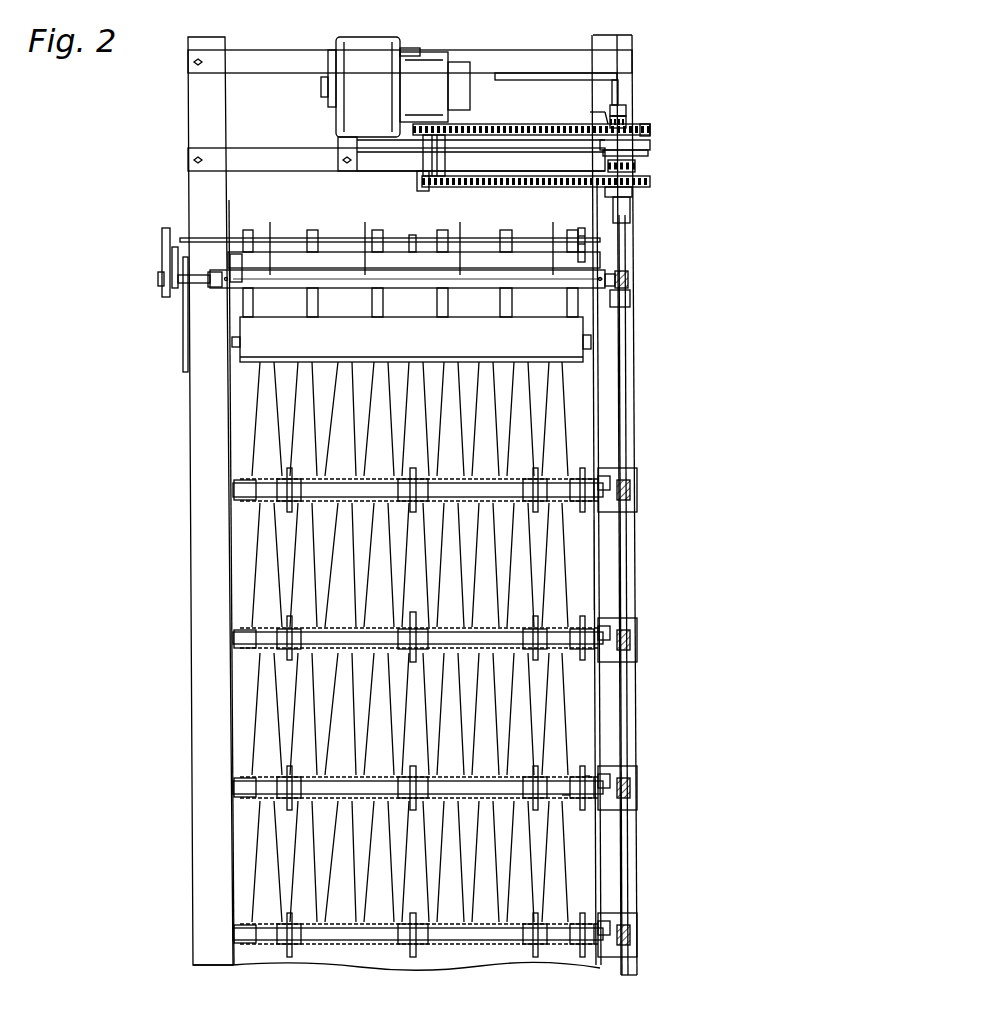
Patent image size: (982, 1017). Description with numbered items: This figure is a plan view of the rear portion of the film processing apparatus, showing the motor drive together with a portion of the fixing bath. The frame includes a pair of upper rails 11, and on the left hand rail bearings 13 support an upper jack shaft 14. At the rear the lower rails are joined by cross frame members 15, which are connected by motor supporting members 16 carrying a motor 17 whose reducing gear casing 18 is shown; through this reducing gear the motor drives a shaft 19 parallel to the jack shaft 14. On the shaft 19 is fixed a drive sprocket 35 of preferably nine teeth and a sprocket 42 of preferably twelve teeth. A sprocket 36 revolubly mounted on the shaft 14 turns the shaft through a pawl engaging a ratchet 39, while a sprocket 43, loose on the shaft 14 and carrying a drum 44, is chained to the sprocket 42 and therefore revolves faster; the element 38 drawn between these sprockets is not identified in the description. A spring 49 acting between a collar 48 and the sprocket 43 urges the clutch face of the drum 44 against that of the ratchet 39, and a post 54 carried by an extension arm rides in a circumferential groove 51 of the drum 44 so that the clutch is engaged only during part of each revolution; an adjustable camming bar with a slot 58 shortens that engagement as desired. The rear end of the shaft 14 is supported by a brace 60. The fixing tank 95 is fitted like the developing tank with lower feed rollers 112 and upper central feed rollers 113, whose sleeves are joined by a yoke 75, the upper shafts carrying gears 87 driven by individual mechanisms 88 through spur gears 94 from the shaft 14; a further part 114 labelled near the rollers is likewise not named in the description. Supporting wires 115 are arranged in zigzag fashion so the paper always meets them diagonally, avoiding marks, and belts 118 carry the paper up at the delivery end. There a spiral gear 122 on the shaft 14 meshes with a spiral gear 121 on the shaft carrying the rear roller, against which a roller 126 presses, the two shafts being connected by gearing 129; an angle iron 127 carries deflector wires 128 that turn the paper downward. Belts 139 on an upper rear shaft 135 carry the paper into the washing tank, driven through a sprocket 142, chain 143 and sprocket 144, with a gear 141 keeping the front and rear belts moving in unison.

The upper rails 11 is at (205, 809).
The bearings 13 is at (630, 214).
The upper jack shaft 14 is at (625, 60).
The cross frame members 15 is at (285, 66).
The motor supporting members 16 is at (445, 160).
The motor 17 is at (338, 128).
The casing 18 is at (436, 60).
The shaft 19 is at (423, 160).
The drive sprocket 35 is at (418, 184).
The sprocket 36 is at (633, 193).
The rack 38 is at (538, 188).
The ratchet 39 is at (636, 168).
The sprocket 42 is at (452, 124).
The sprocket 43 is at (628, 123).
The drum 44 is at (650, 143).
The collar 48 is at (628, 106).
The spring 49 is at (630, 117).
The circumferential groove 51 is at (648, 153).
The post 54 is at (652, 128).
The slot 58 is at (590, 112).
The brace 60 is at (552, 80).
The yoke 75 is at (428, 648).
The gear 87 is at (592, 772).
The mechanism 88 is at (632, 636).
The spur gear 94 is at (578, 796).
The fixing tank 95 is at (580, 566).
The lower feed rollers 112 is at (446, 632).
The upper central feed rollers 113 is at (412, 470).
The disc 114 is at (288, 508).
The supporting wires 115 is at (565, 410).
The belts 118 is at (430, 301).
The spiral gear 121 is at (630, 272).
The spiral gear 122 is at (632, 280).
The roller 126 is at (312, 270).
The angle iron 127 is at (500, 283).
The deflector wires 128 is at (460, 228).
The gearing 129 is at (235, 252).
The upper rear shaft 135 is at (350, 222).
The belts 139 is at (310, 232).
The gear 141 is at (590, 236).
The sprocket 142 is at (162, 290).
The chain 143 is at (162, 262).
The sprocket 144 is at (162, 238).